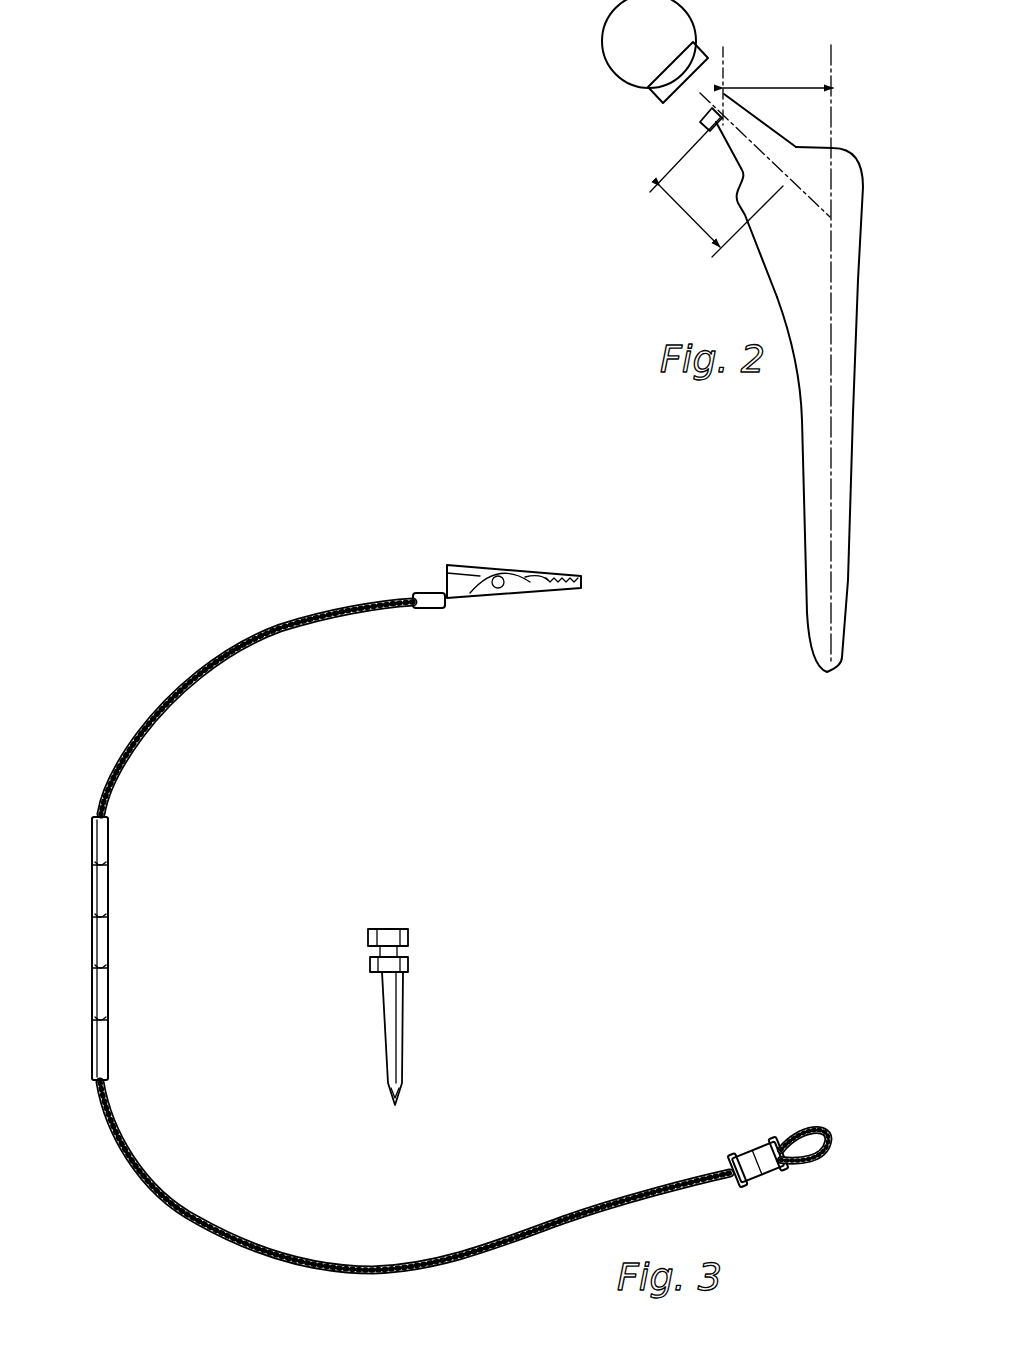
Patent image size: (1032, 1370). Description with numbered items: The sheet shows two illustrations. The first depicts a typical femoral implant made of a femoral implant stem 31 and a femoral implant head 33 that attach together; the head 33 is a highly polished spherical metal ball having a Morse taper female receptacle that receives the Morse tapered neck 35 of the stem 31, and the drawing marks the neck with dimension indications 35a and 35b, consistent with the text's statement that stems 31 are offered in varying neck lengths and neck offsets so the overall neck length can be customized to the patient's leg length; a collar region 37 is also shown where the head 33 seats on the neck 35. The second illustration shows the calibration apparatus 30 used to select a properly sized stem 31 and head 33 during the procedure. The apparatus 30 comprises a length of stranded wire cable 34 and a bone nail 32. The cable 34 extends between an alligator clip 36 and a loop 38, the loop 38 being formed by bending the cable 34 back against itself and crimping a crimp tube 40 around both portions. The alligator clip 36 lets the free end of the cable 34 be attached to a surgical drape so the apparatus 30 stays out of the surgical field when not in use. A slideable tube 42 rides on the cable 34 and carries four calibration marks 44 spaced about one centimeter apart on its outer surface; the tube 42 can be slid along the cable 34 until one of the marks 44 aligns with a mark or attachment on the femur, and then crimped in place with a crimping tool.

In FIG. 3, the calibration apparatus 30 is at (588, 916).
In FIG. 2, the femoral implant stem 31 is at (803, 497).
In FIG. 3, the bone nail 32 is at (382, 1020).
In FIG. 2, the femoral implant head 33 is at (612, 66).
In FIG. 3, the stranded wire cable 34 is at (580, 1214).
In FIG. 2, the Morse tapered neck 35 is at (700, 127).
In FIG. 2, the neck length dimension 35a is at (696, 225).
In FIG. 2, the neck offset dimension 35b is at (770, 90).
In FIG. 3, the alligator clip 36 is at (452, 565).
In FIG. 2, the collar 37 is at (706, 50).
In FIG. 3, the loop 38 is at (772, 1140).
In FIG. 3, the crimp tube 40 is at (735, 1150).
In FIG. 3, the slideable tube 42 is at (67, 924).
In FIG. 3, the calibration marks 44 is at (92, 1022).